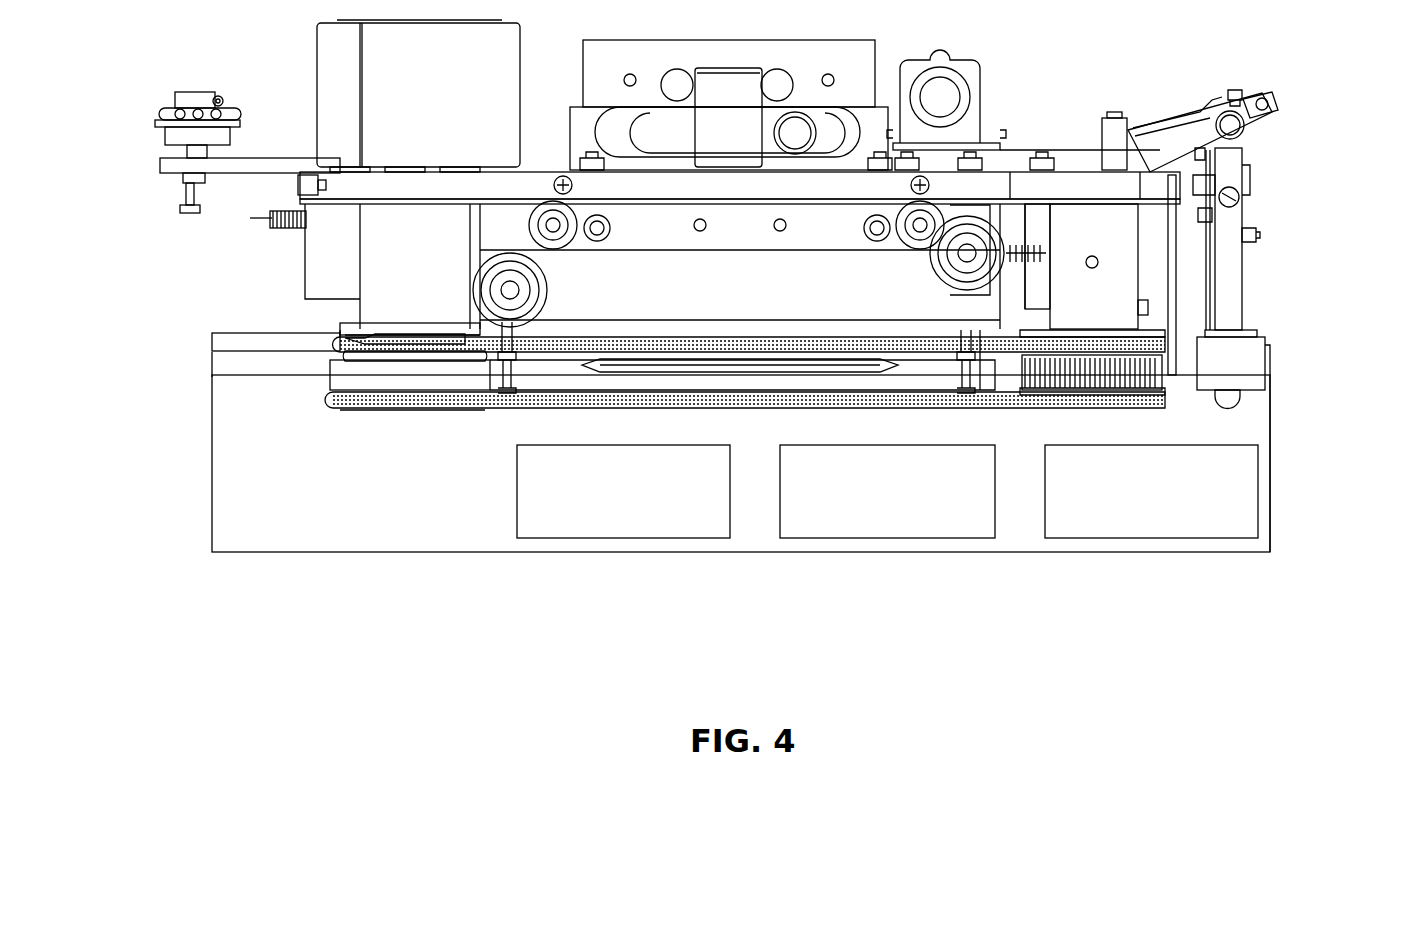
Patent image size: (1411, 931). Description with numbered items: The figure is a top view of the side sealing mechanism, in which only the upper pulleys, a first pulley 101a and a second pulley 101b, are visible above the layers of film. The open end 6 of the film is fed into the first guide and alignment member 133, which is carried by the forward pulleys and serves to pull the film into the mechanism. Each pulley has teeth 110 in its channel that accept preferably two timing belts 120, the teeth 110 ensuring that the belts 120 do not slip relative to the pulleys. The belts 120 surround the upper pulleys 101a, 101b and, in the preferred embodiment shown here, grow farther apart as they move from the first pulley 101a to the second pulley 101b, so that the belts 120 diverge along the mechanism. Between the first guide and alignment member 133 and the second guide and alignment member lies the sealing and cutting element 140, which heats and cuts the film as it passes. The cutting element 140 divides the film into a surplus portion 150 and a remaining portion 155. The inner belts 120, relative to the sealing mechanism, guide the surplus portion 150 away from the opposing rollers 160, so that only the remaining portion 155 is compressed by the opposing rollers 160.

The open end 6 is at (1285, 358).
The first pulley 101a is at (1176, 340).
The second pulley 101b is at (372, 320).
The teeth 110 is at (1115, 372).
The timing belts 120 is at (1000, 392).
The first guide and alignment member 133 is at (1180, 400).
The sealing and cutting element 140 is at (765, 372).
The surplus portion 150 is at (225, 337).
The remaining portion 155 is at (741, 463).
The opposing rollers 160 is at (662, 375).